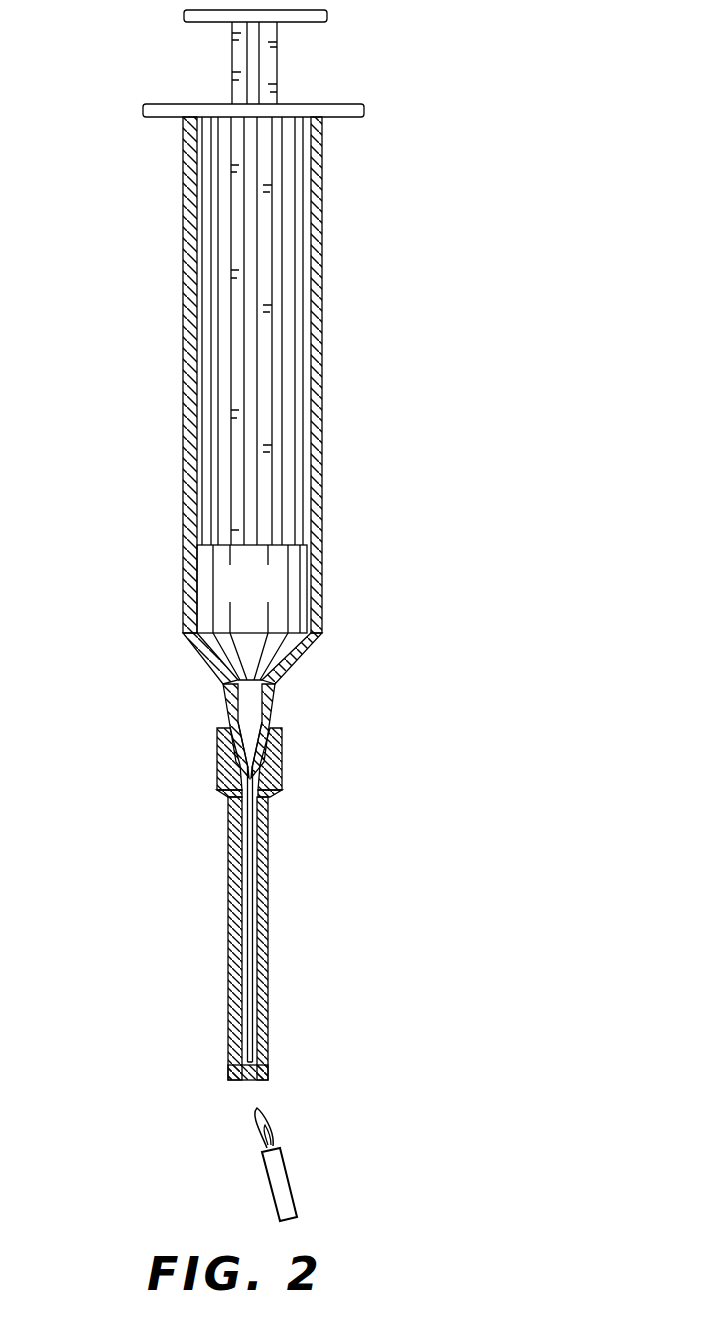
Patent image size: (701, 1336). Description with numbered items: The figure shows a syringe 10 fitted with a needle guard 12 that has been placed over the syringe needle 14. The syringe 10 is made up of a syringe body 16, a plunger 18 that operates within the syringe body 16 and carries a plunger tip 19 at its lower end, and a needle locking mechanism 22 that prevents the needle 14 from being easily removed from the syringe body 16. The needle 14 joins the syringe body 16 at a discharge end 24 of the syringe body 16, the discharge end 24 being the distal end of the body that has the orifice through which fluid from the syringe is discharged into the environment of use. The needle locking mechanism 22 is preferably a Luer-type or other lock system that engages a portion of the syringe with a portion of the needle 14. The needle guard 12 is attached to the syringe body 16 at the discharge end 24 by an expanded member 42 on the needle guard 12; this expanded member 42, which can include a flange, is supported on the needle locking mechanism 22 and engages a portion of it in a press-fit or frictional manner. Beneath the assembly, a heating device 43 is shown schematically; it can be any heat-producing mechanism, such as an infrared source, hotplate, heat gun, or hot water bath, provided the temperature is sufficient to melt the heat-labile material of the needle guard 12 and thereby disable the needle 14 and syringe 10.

The syringe 10 is at (245, 394).
The needle guard 12 is at (269, 857).
The syringe needle 14 is at (250, 948).
The syringe body 16 is at (318, 340).
The plunger 18 is at (274, 205).
The plunger tip 19 is at (262, 593).
The needle locking mechanism 22 is at (272, 716).
The discharge end 24 is at (219, 698).
The expanded member 42 is at (283, 748).
The heating device 43 is at (294, 1195).